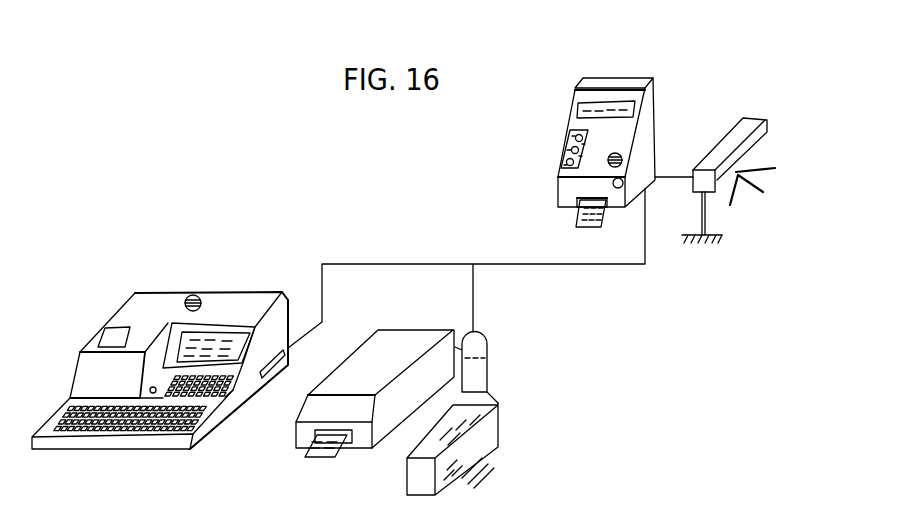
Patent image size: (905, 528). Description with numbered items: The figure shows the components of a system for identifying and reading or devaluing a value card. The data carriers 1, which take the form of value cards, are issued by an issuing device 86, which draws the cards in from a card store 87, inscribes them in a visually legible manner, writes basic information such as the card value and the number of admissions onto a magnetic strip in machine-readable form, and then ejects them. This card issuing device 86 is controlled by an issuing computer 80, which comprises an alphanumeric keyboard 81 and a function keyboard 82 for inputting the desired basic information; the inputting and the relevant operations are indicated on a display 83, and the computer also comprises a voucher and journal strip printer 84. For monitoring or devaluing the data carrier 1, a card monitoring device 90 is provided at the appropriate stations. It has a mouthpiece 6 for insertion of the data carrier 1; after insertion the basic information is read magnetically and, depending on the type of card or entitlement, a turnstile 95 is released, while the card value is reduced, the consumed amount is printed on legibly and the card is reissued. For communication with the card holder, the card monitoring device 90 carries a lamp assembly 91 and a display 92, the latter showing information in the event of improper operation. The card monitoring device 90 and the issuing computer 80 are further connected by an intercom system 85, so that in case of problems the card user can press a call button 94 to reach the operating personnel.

The data carrier 1 is at (323, 452).
The mouthpiece 6 is at (577, 205).
The issuing computer 80 is at (154, 292).
The alphanumeric keyboard 81 is at (141, 427).
The function keyboard 82 is at (223, 390).
The display 83 is at (230, 336).
The voucher and journal strip printer 84 is at (117, 333).
The intercom system 85 is at (195, 294).
The issuing device 86 is at (352, 346).
The card store 87 is at (473, 452).
The card monitoring device 90 is at (653, 96).
The lamp assembly 91 is at (568, 142).
The display 92 is at (612, 102).
The call button 94 is at (623, 186).
The turnstile 95 is at (753, 124).